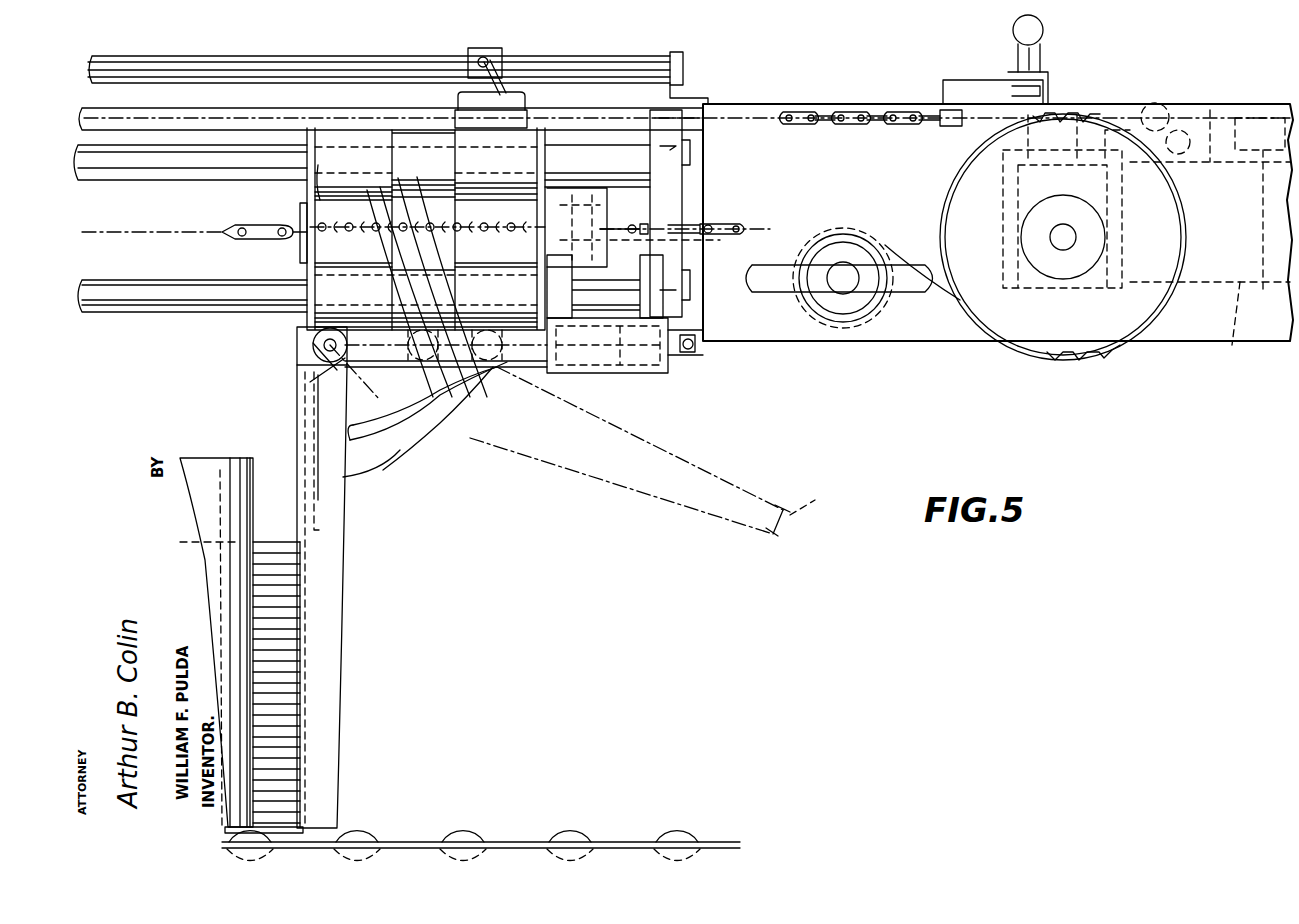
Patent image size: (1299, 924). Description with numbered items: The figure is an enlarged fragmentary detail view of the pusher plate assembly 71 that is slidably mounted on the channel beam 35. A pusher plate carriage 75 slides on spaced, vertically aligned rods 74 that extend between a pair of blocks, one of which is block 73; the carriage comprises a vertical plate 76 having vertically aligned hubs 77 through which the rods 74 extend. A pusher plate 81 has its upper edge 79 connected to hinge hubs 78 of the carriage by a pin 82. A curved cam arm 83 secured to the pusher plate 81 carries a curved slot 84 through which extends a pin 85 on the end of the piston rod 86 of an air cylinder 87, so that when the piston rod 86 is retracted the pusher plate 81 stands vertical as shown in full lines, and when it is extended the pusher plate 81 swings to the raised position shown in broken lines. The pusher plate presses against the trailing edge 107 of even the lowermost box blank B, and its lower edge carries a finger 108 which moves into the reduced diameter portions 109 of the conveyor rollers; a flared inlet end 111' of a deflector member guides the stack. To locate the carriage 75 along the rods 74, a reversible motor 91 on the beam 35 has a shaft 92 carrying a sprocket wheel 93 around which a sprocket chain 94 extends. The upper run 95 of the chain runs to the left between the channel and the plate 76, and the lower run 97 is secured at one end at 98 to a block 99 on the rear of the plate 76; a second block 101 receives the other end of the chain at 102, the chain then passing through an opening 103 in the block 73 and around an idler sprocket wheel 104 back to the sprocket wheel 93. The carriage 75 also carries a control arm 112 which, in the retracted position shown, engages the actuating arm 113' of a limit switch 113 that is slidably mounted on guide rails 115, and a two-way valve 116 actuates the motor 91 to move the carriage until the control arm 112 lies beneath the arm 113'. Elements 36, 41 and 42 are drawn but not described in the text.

The guide rails 115 is at (368, 62).
The limit switch 113 is at (498, 48).
The actuating arm 113' is at (459, 62).
The control arm 112 is at (510, 92).
The rods 74 is at (128, 178).
The lower run of sprocket chain 97 is at (206, 233).
The pusher plate carriage 75 is at (368, 130).
The hubs 77 is at (318, 150).
The vertical plate 76 is at (310, 205).
The cam arm 83 is at (447, 432).
The curved slot 84 is at (397, 462).
The second block 101 is at (597, 155).
The block 99 is at (577, 209).
The chain connection 102 is at (616, 192).
The pin 85 is at (571, 286).
The chain securing point 98 is at (490, 163).
The block 73 is at (688, 144).
The opening 103 is at (706, 241).
The air cylinder 87 is at (588, 374).
The piston rod 86 is at (530, 370).
The hinge hubs 78 is at (313, 343).
The pin 82 is at (320, 358).
The upper edge of pusher plate 79 is at (322, 372).
The pusher plate 81 is at (338, 578).
The flared inlet end 111' is at (216, 629).
The trailing edge 107 is at (302, 786).
The box blank B is at (262, 536).
The pusher plate assembly 71 is at (430, 532).
The finger 108 is at (320, 828).
The conveyor 36 is at (736, 840).
The conveyor roller 41 is at (488, 840).
The conveyor roller 42 is at (464, 838).
The reduced diameter portions 109 is at (358, 840).
The channel beam 35 is at (1196, 322).
The reversible motor 91 is at (1232, 342).
The two-way valve 116 is at (1015, 50).
The upper run of sprocket chain 95 is at (878, 116).
The sprocket chain 94 is at (956, 136).
The idler sprocket wheel 104 is at (805, 300).
The shaft 92 is at (1062, 228).
The sprocket wheel 93 is at (1078, 350).